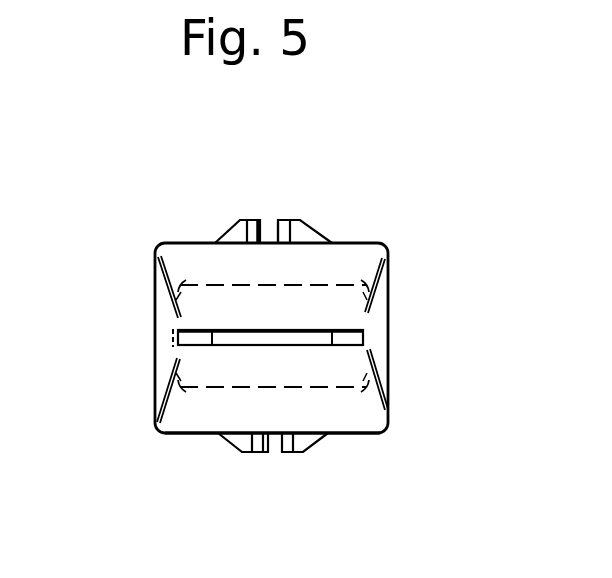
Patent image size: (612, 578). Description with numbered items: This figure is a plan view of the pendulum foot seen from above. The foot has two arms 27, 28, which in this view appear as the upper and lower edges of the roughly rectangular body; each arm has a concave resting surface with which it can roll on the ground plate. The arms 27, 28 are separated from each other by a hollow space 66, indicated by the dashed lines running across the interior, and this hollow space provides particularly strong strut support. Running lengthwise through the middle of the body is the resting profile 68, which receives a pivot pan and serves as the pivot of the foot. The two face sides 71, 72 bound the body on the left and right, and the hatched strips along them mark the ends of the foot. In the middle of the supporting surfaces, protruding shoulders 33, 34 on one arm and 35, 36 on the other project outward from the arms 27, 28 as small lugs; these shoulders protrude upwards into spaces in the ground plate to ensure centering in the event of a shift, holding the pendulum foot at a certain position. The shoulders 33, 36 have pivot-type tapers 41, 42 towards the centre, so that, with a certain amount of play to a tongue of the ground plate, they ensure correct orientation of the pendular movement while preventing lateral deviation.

The arm 27 is at (178, 243).
The arm 28 is at (193, 433).
The protruding shoulder 33 is at (235, 235).
The protruding shoulder 34 is at (308, 232).
The protruding shoulder 35 is at (247, 437).
The protruding shoulder 36 is at (302, 438).
The pivot-type taper 41 is at (254, 230).
The pivot-type taper 42 is at (283, 230).
The hollow space 66 is at (295, 302).
The resting profile 68 is at (318, 335).
The face side 71 is at (155, 357).
The face side 72 is at (389, 357).